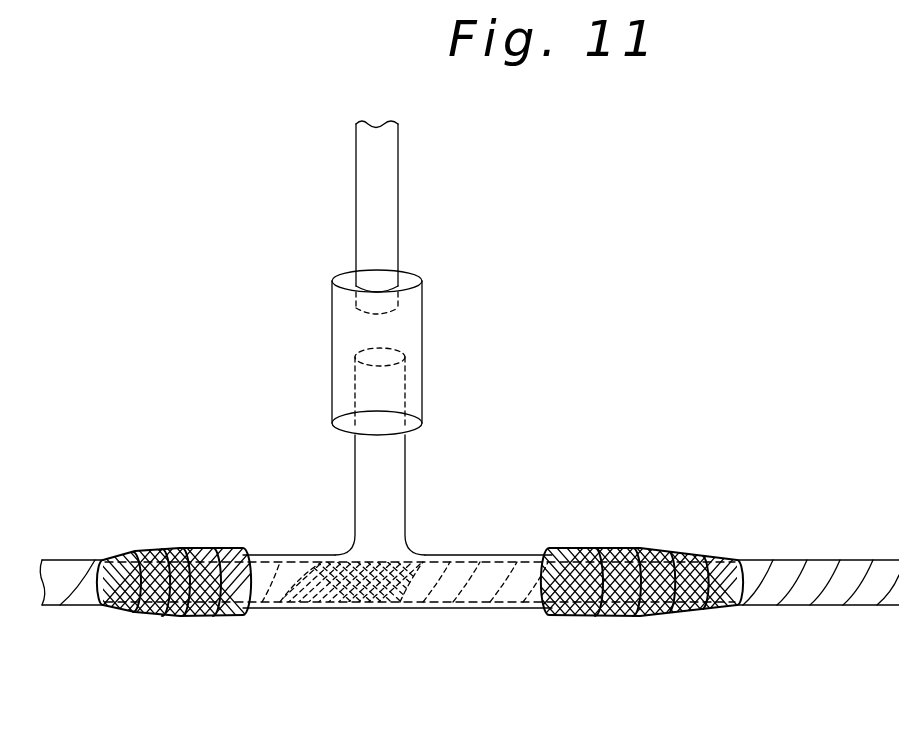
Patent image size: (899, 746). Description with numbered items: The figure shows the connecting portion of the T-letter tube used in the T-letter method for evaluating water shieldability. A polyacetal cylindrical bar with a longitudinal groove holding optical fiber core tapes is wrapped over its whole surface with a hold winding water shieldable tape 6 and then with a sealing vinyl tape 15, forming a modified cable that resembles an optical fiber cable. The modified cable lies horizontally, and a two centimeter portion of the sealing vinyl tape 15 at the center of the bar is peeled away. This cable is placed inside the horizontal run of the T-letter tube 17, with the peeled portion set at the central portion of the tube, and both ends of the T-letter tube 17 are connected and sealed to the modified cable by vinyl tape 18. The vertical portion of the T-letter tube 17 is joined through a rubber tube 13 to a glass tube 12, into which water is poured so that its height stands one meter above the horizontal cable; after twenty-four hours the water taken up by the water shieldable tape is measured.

The hold winding water shieldable tape 6 is at (353, 608).
The glass tube 12 is at (398, 176).
The rubber tube 13 is at (414, 318).
The sealing vinyl tape 15 is at (75, 605).
The T-letter tube 17 is at (400, 484).
The vinyl tape 18 is at (158, 614).